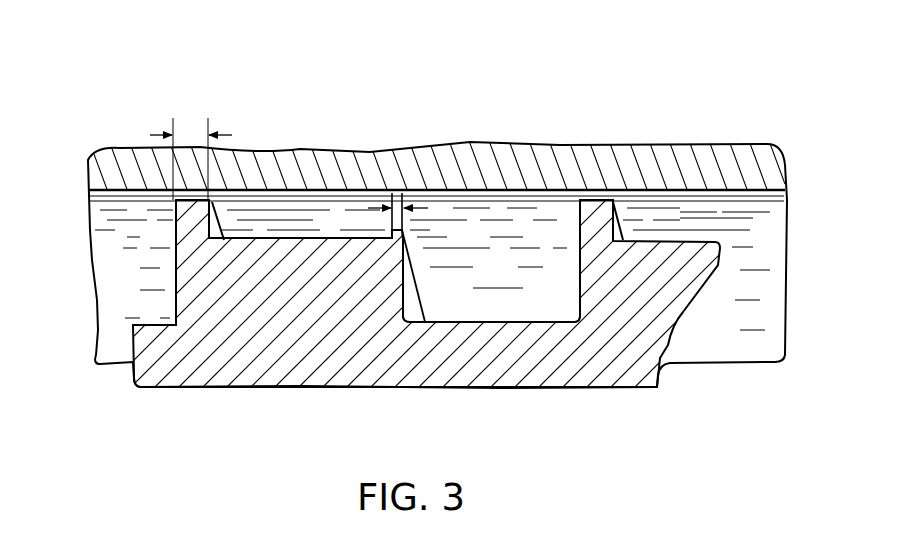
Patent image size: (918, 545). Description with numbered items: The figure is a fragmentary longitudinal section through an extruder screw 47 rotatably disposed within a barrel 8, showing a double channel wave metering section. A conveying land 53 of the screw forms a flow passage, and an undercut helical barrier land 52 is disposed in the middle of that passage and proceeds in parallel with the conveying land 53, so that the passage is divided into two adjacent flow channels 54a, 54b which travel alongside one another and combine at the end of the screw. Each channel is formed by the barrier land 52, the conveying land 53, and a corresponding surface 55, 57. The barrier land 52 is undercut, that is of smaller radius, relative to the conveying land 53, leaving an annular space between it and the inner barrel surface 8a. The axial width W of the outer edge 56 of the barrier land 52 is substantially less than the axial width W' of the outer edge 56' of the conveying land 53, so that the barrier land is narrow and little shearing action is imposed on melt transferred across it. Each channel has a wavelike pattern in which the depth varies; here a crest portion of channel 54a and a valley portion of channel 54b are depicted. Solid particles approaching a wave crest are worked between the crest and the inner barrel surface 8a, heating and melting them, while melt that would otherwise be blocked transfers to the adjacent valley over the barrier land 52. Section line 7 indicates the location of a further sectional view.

The barrel 8 is at (707, 148).
The inner barrel surface 8a is at (748, 192).
The extruder screw 47 is at (128, 380).
The barrier land 52 is at (403, 262).
The conveying land 53 is at (182, 216).
The flow channel 54a is at (272, 205).
The flow channel 54b is at (497, 302).
The surface 55 is at (258, 237).
The outer edge of the barrier land 56 is at (395, 211).
The outer edge of the conveying land 56' is at (379, 110).
The surface 57 is at (562, 320).
The section line 7- 7 is at (260, 98).